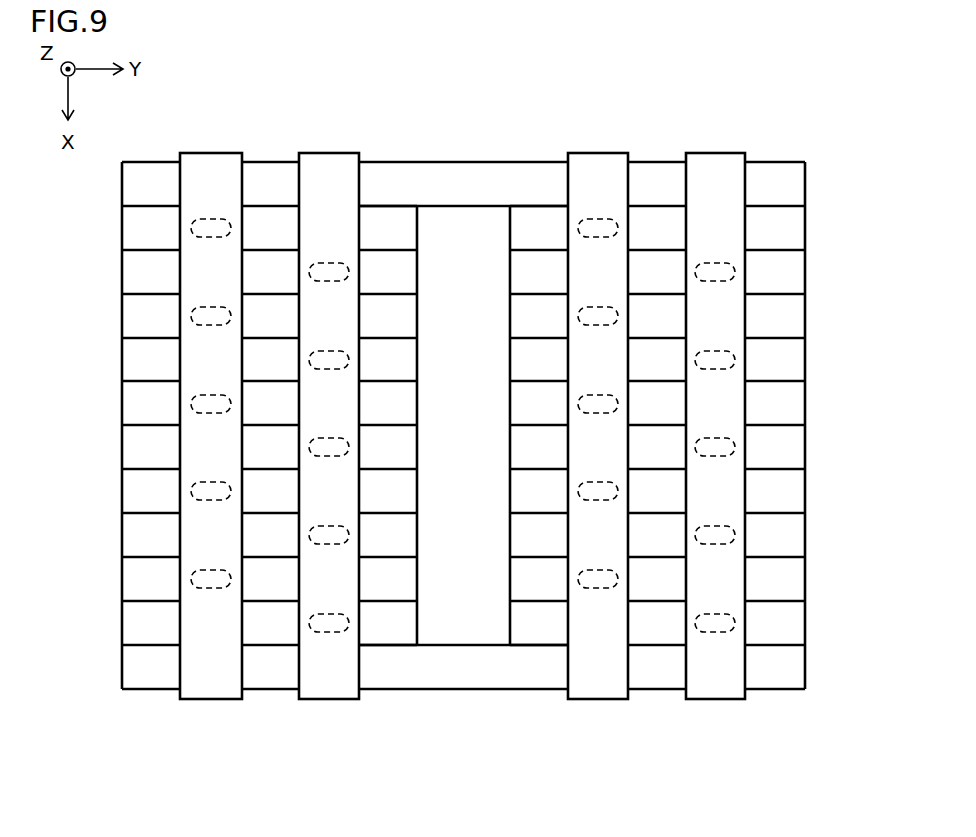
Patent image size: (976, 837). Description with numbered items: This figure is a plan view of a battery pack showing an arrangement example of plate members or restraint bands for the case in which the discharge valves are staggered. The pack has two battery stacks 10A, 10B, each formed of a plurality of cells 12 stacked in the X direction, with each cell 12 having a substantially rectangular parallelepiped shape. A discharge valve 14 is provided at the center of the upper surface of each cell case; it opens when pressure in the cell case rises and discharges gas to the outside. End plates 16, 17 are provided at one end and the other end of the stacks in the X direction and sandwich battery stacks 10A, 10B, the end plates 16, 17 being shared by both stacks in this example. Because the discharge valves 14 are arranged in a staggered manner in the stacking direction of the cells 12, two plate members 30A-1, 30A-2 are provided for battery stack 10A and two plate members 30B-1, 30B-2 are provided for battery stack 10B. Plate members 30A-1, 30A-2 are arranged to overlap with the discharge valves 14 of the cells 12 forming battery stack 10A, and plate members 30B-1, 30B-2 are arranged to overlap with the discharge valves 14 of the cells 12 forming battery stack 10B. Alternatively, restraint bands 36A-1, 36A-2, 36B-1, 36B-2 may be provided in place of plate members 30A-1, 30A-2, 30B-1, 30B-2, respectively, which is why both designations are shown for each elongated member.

The battery stack 10A is at (278, 742).
The battery stack 10B is at (663, 742).
The cell 12 is at (142, 229).
The discharge valve 14 is at (198, 218).
The end plate 16 is at (462, 175).
The end plate 17 is at (463, 676).
The plate member 30A-1 is at (211, 153).
The plate member 30A-2 is at (328, 153).
The plate member 30B-1 is at (598, 153).
The plate member 30B-2 is at (716, 153).
The restraint band 36A-1 is at (206, 402).
The restraint band 36A-2 is at (325, 402).
The restraint band 36B-1 is at (593, 402).
The restraint band 36B-2 is at (711, 402).